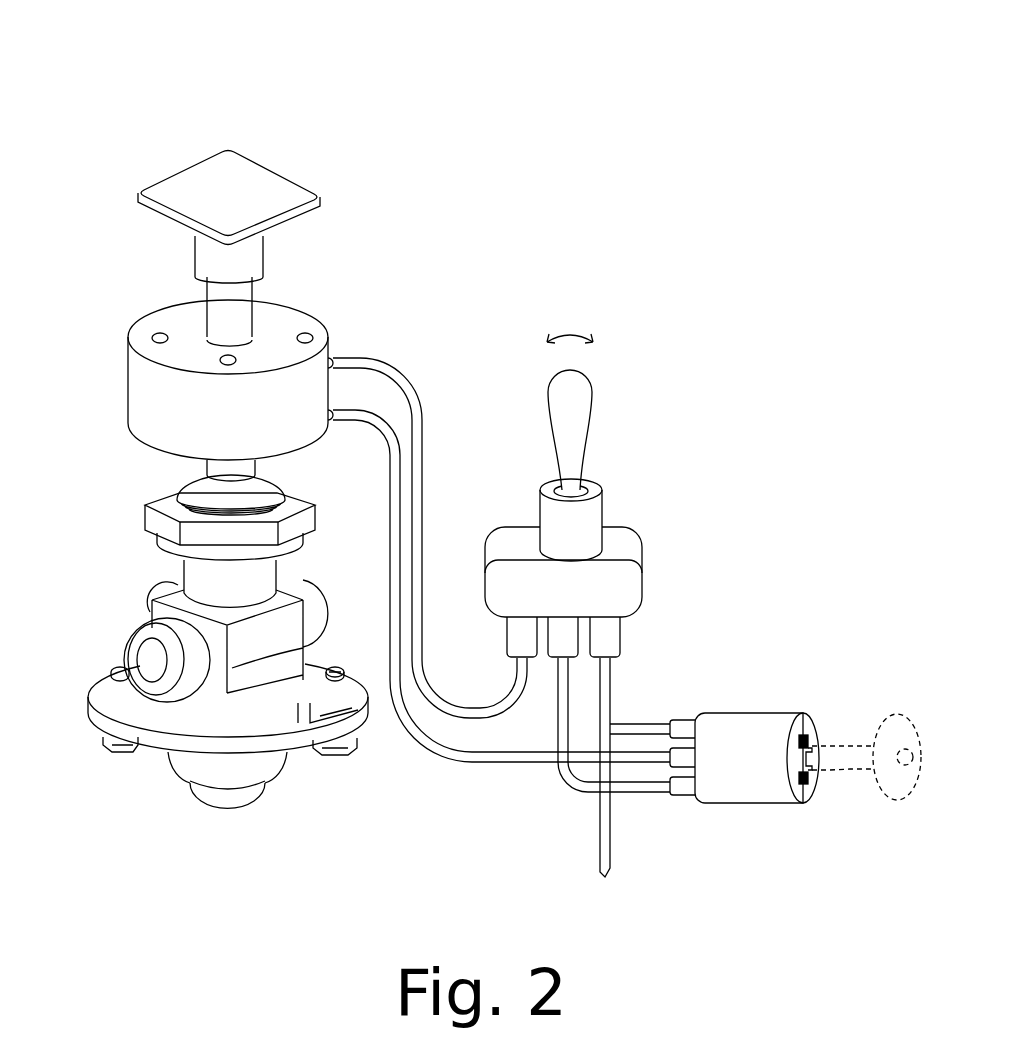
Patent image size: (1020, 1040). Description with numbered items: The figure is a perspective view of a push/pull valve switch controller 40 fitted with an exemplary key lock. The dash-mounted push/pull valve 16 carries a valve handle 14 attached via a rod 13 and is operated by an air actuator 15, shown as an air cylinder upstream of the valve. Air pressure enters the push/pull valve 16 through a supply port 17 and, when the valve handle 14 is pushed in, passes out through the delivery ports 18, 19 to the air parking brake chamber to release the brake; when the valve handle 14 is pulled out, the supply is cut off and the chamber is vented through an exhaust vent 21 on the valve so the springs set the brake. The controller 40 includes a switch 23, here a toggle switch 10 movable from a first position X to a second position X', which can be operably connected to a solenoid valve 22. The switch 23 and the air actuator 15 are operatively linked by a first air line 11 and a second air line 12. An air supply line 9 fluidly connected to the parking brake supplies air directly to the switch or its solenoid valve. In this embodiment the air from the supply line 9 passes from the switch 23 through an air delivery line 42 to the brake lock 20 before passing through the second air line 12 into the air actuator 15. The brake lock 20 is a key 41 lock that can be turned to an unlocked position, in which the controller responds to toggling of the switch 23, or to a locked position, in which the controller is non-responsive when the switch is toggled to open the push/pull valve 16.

The air supply line 9 is at (607, 843).
The toggle switch 10 is at (565, 435).
The first air line 11 is at (465, 710).
The second air line 12 is at (525, 763).
The rod 13 is at (238, 325).
The valve handle 14 is at (263, 197).
The air actuator 15 is at (153, 395).
The push/pull valve 16 is at (127, 807).
The supply port 17 is at (148, 595).
The delivery port 18 is at (315, 610).
The delivery port 19 is at (155, 668).
The brake lock 20 is at (735, 790).
The exhaust vent 21 is at (222, 803).
The solenoid valve 22 is at (628, 590).
The switch 23 is at (513, 505).
The push/pull valve switch controller 40 is at (667, 405).
The key 41 is at (888, 725).
The air delivery line 42 is at (652, 787).